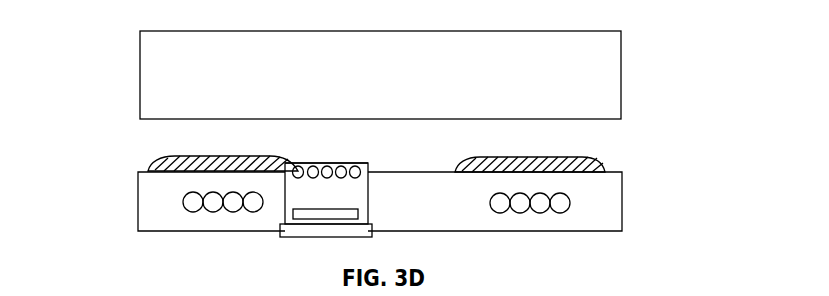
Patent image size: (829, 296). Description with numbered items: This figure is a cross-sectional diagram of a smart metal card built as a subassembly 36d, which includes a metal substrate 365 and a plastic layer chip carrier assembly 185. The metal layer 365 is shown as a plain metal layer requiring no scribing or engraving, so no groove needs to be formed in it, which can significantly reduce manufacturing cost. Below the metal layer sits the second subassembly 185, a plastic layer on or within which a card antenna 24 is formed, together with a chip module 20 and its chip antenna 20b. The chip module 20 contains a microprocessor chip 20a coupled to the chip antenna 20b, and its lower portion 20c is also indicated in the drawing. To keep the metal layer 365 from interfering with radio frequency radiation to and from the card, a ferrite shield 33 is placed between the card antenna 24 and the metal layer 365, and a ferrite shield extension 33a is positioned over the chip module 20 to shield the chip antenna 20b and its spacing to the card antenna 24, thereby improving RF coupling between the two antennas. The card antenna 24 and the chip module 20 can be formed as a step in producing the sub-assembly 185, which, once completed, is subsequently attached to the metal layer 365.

The metal substrate 365 is at (140, 47).
The subassembly 36d is at (621, 22).
The plastic layer chip carrier assembly 185 is at (622, 195).
The card antenna 24 is at (223, 214).
The ferrite shield 33 is at (614, 137).
The ferrite shield extension 33a is at (300, 162).
The chip module 20 is at (368, 205).
The microprocessor chip 20a is at (318, 212).
The chip antenna 20b is at (365, 163).
The device base plate 20c is at (284, 237).